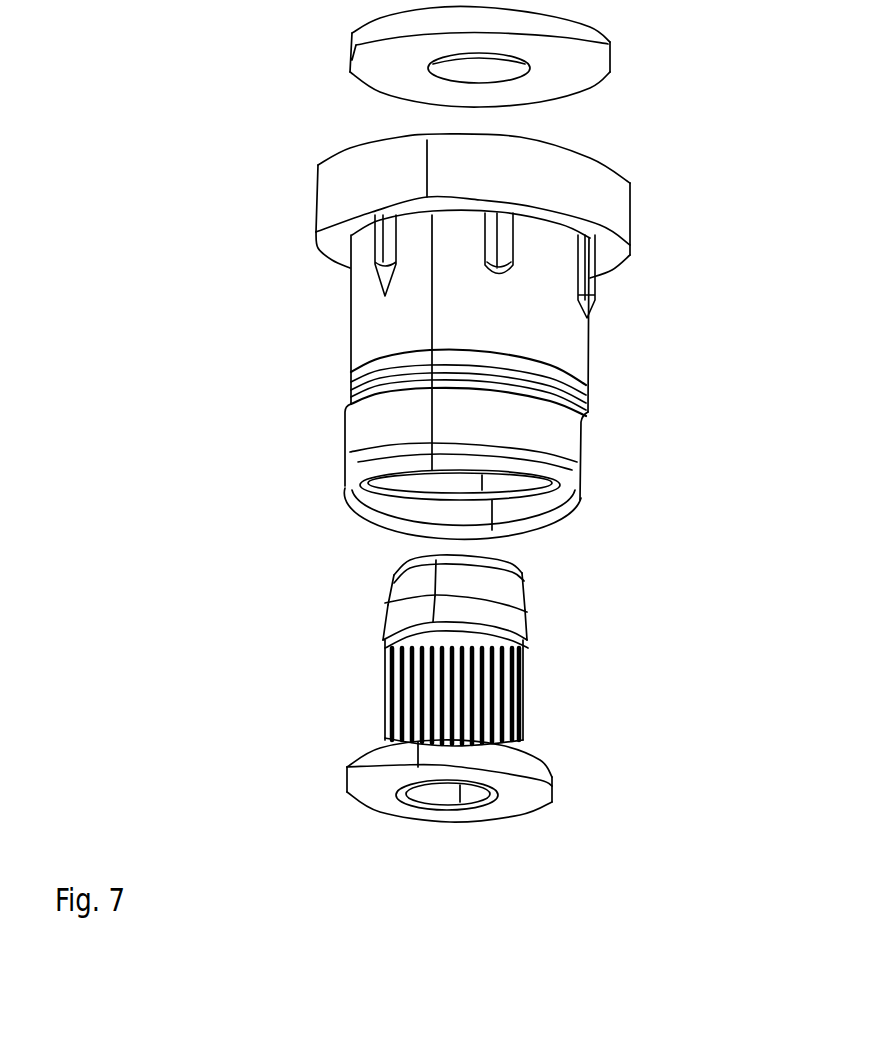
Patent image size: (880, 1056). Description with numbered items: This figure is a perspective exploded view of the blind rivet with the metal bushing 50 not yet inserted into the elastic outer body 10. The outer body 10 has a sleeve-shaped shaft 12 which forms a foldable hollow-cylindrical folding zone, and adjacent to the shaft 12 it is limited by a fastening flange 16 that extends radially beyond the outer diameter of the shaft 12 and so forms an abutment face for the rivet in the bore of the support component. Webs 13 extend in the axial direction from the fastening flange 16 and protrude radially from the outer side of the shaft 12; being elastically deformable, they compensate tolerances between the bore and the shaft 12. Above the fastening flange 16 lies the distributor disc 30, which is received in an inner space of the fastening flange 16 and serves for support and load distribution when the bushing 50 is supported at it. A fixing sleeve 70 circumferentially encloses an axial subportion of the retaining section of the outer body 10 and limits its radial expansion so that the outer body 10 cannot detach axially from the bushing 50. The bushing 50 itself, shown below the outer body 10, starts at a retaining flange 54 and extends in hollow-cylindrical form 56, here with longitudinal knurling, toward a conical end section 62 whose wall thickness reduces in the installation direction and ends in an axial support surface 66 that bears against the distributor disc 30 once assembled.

The outer body 10 is at (313, 351).
The sleeve-shaped shaft 12 is at (553, 336).
The webs 13 is at (598, 275).
The fastening flange 16 is at (620, 210).
The distributor disc 30 is at (597, 45).
The metal bushing 50 is at (355, 704).
The retaining flange 54 is at (538, 773).
The hollow-cylindrical form 56 is at (523, 693).
The conical end section 62 is at (512, 615).
The axial support surface 66 is at (520, 566).
The fixing sleeve 70 is at (563, 437).